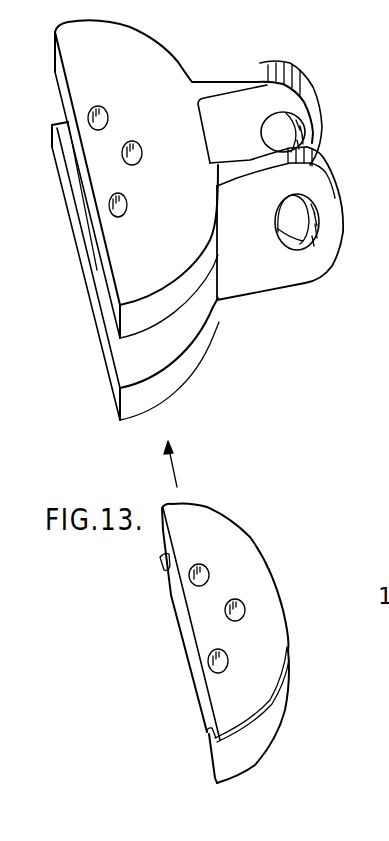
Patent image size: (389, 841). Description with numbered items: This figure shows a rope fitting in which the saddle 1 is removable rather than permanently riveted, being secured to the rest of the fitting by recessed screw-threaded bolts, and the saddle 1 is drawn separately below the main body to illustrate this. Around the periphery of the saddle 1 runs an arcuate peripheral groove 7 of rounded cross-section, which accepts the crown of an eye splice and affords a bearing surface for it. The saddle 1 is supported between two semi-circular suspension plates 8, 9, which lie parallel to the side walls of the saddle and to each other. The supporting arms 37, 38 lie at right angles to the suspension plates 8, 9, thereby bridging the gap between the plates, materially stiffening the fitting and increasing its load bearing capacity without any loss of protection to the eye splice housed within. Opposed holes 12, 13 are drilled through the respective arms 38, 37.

The saddle 1 is at (202, 615).
The arcuate peripheral groove 7 is at (250, 732).
The suspension plate 8 is at (188, 375).
The suspension plate 9 is at (167, 310).
The hole 12 is at (277, 125).
The hole 13 is at (302, 238).
The supporting arm 37 is at (315, 178).
The supporting arm 38 is at (213, 83).